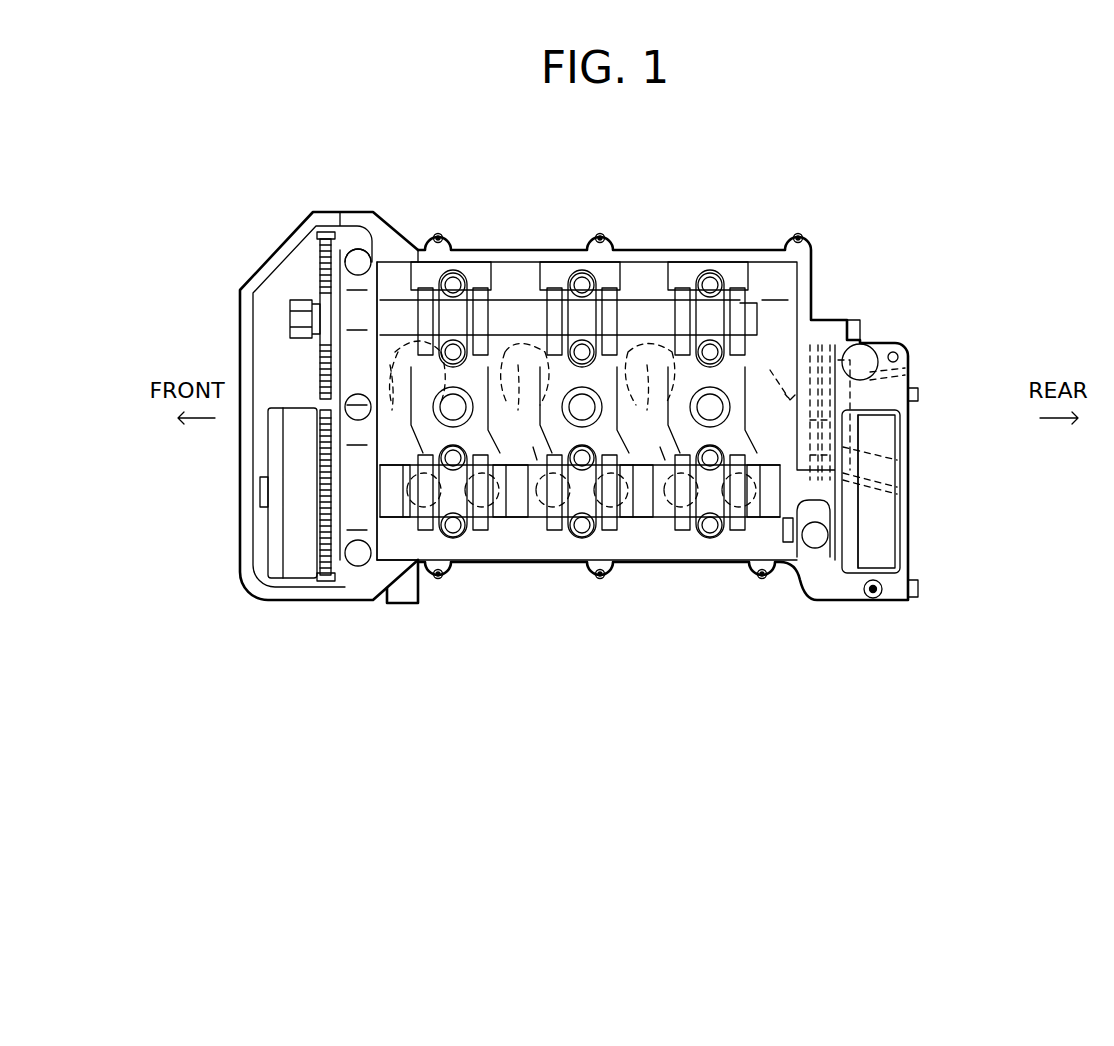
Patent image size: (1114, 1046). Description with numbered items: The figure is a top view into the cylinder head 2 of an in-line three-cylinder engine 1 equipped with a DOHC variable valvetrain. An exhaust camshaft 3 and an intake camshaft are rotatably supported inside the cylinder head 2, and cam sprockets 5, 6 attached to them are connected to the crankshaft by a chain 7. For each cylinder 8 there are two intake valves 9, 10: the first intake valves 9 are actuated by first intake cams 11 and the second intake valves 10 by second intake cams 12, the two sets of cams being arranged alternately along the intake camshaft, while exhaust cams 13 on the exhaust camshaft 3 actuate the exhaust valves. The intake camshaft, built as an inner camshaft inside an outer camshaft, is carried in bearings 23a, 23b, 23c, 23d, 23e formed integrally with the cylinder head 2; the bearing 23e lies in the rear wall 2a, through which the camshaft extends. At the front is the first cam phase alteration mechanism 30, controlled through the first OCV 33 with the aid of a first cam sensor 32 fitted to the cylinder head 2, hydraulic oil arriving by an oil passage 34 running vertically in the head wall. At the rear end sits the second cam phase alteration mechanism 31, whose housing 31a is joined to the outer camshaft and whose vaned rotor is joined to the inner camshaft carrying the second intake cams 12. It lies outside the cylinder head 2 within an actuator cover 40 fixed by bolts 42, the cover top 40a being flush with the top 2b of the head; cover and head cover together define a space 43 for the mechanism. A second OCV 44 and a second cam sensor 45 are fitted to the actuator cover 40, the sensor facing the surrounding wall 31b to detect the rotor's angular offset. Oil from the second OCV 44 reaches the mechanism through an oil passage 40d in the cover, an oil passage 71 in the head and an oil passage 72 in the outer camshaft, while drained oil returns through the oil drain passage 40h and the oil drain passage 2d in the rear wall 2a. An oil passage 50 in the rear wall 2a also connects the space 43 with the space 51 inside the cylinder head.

The engine 1 is at (616, 183).
The cylinder head 2 is at (698, 262).
The rear wall 2a is at (832, 602).
The top of the cylinder head 2b is at (808, 268).
The oil drain passage 2d is at (818, 345).
The exhaust camshaft 3 is at (515, 300).
The cam sprocket 5 is at (310, 244).
The cam sprocket 6 is at (352, 548).
The chain 7 is at (325, 232).
The cylinder 8 is at (528, 375).
The first intake valve 9 is at (423, 535).
The second intake valve 10 is at (497, 520).
The first intake cam 11 is at (436, 540).
The second intake cam 12 is at (480, 535).
The exhaust cam 13 is at (420, 290).
The bearing 23a is at (380, 562).
The bearing 23b is at (453, 540).
The bearing 23c is at (582, 540).
The bearing 23d is at (710, 540).
The bearing 23e is at (812, 560).
The first cam phase alteration mechanism 30 is at (292, 580).
The second cam phase alteration mechanism 31 is at (902, 522).
The housing 31a is at (860, 575).
The surrounding wall 31b is at (900, 413).
The first cam sensor 32 is at (787, 545).
The first OCV 33 is at (400, 604).
The oil passage 34 is at (385, 523).
The actuator cover 40 is at (908, 362).
The top of the actuator cover 40a is at (900, 358).
The oil passage 40d is at (908, 372).
The oil drain passage 40h is at (845, 330).
The bolt 42 is at (855, 330).
The space 43 is at (893, 576).
The second OCV 44 is at (880, 352).
The second cam sensor 45 is at (912, 404).
The oil passage 50 is at (900, 465).
The space 51 is at (775, 287).
The oil passage 71 is at (776, 370).
The oil passage 72 is at (900, 487).